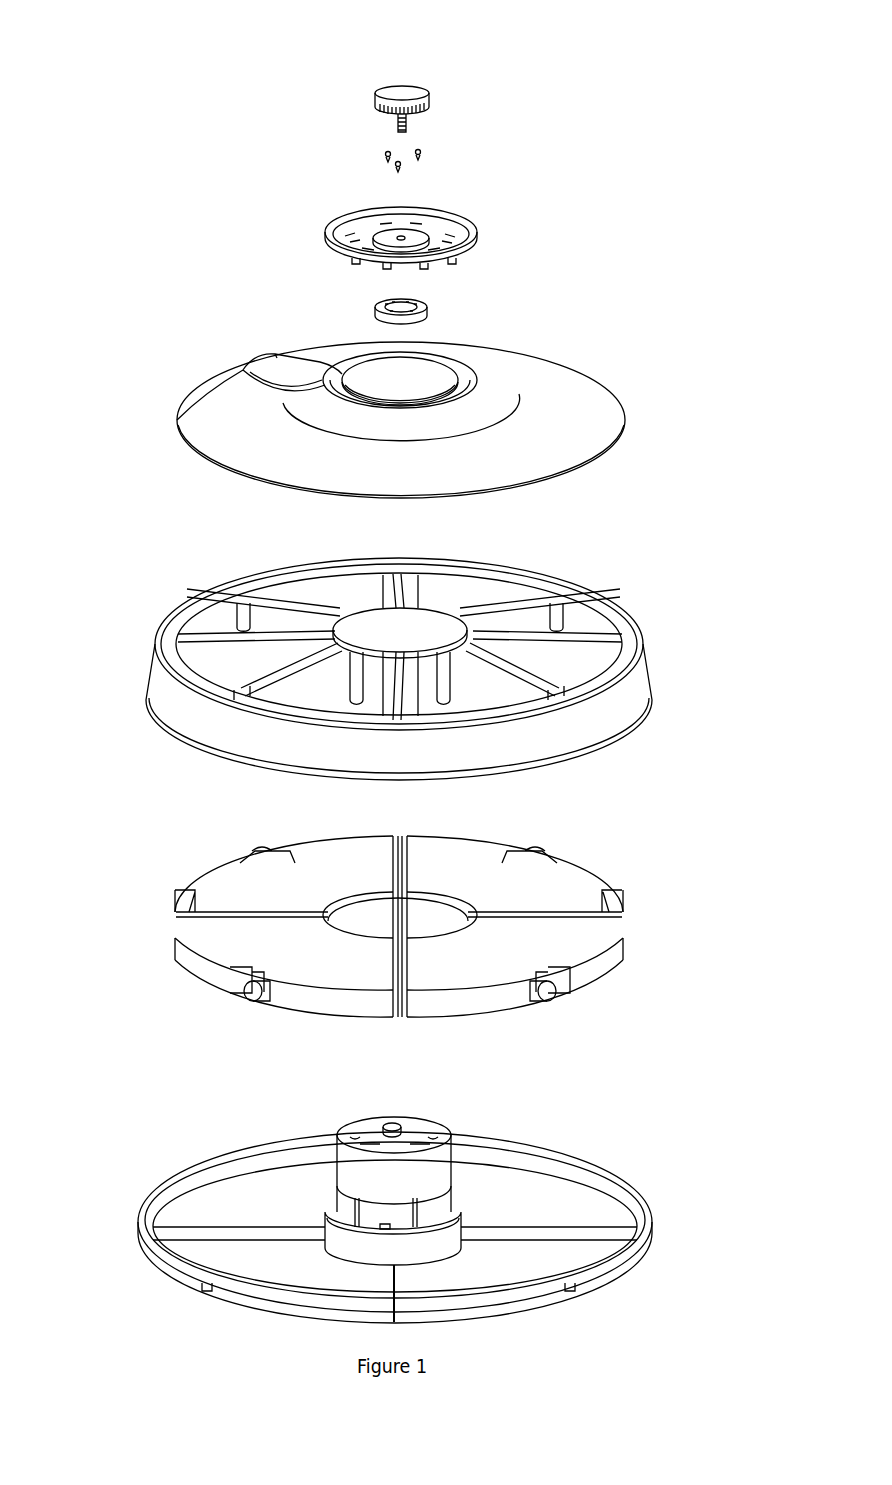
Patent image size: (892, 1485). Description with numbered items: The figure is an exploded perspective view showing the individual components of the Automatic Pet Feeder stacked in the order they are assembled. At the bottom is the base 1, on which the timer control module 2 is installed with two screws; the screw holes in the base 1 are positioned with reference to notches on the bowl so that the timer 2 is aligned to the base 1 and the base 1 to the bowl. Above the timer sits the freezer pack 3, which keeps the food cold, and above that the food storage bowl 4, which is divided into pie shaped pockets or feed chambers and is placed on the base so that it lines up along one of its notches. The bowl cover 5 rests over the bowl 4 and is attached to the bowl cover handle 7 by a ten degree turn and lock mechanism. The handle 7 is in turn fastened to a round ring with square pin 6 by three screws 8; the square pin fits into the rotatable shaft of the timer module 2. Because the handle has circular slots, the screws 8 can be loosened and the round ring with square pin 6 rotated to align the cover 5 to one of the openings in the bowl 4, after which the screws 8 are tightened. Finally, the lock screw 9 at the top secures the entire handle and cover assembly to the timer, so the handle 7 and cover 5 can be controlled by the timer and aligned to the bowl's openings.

The base 1 is at (540, 1143).
The timer control module 2 is at (447, 1162).
The freezer pack 3 is at (503, 843).
The food storage bowl 4 is at (523, 568).
The bowl cover 5 is at (512, 340).
The round ring with square pin 6 is at (420, 300).
The bowl cover handle 7 is at (458, 213).
The screws 8 is at (425, 153).
The lock screw 9 is at (430, 93).